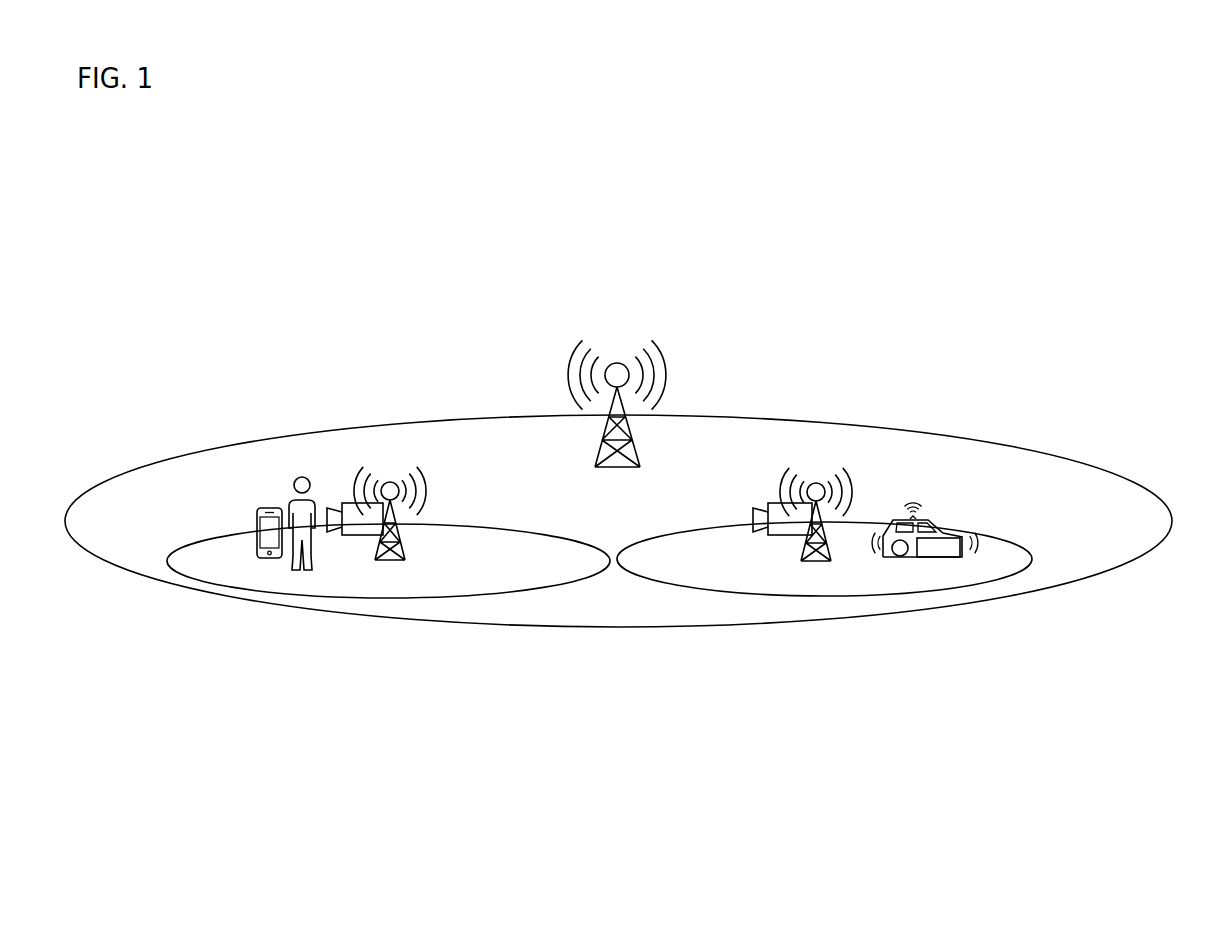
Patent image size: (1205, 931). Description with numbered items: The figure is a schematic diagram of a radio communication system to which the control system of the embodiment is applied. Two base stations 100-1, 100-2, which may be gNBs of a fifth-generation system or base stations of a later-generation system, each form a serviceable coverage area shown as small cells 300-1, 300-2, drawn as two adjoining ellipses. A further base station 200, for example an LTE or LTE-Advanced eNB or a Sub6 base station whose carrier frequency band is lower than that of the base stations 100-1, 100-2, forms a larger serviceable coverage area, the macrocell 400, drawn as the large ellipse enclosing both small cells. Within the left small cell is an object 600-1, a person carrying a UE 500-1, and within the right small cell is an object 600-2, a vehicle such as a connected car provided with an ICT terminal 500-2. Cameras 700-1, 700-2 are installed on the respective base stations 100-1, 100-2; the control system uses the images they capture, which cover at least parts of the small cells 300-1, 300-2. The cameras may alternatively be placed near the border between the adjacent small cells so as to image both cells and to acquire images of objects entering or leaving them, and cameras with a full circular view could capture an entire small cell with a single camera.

The base station 100-1 is at (392, 468).
The base station 100-2 is at (815, 469).
The base station 200 is at (611, 343).
The small cell 300-1 is at (492, 525).
The small cell 300-2 is at (1025, 544).
The macrocell 400 is at (712, 417).
The UE (User Equipment) 500-1 is at (257, 545).
The ICT terminal 500-2 is at (937, 557).
The object 600-1 is at (312, 538).
The object 600-2 is at (926, 519).
The camera 700-1 is at (346, 502).
The camera 700-2 is at (774, 503).